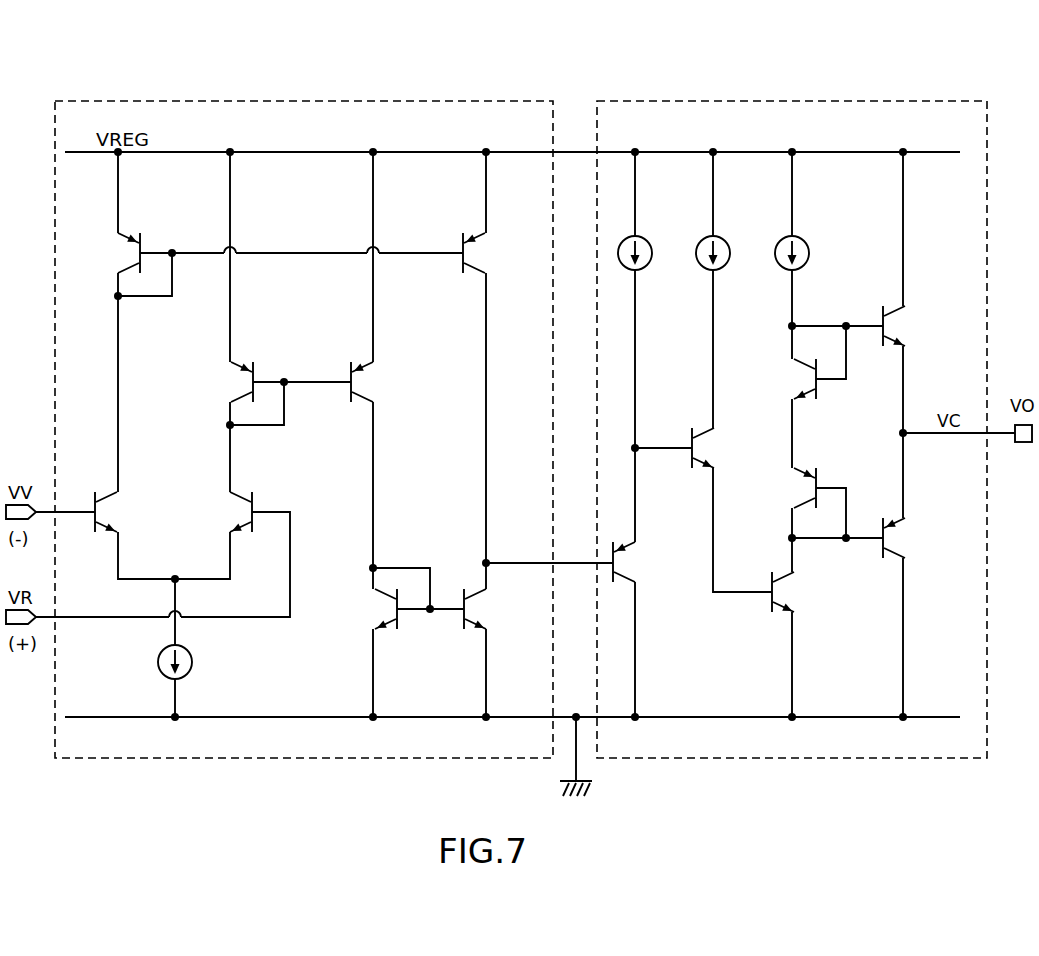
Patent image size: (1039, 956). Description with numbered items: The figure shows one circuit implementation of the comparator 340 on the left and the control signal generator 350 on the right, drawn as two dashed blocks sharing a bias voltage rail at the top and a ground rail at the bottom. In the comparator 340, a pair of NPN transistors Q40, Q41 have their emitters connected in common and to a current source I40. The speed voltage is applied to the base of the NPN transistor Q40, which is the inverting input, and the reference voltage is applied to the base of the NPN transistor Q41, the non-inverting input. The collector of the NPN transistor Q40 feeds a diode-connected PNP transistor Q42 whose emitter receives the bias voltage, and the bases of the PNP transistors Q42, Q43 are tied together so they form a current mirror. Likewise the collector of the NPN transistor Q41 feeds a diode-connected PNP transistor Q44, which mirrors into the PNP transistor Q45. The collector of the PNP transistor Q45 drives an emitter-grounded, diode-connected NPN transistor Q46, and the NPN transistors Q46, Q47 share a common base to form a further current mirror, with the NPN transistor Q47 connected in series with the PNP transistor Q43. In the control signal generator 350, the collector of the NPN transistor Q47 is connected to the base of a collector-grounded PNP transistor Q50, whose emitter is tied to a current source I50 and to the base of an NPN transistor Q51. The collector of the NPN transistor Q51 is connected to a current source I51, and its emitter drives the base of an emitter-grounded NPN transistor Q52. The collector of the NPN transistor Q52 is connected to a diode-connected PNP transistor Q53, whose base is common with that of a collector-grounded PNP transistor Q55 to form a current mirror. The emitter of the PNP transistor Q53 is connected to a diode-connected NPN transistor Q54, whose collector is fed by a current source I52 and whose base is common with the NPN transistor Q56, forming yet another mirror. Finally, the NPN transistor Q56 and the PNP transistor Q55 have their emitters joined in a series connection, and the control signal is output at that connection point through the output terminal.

The comparator 340 is at (393, 102).
The control signal generator 350 is at (903, 101).
The NPN transistor Q40 is at (135, 437).
The NPN transistor Q41 is at (213, 535).
The PNP transistor Q42 is at (130, 226).
The PNP transistor Q43 is at (495, 359).
The PNP transistor Q44 is at (242, 322).
The PNP transistor Q45 is at (383, 362).
The NPN transistor Q46 is at (387, 642).
The NPN transistor Q47 is at (477, 640).
The current source I40 is at (192, 648).
The current source I50 is at (651, 302).
The current source I51 is at (730, 290).
The current source I52 is at (809, 241).
The PNP transistor Q50 is at (643, 582).
The NPN transistor Q51 is at (703, 510).
The NPN transistor Q52 is at (802, 627).
The PNP transistor Q53 is at (823, 505).
The NPN transistor Q54 is at (823, 395).
The PNP transistor Q55 is at (913, 575).
The NPN transistor Q56 is at (913, 294).